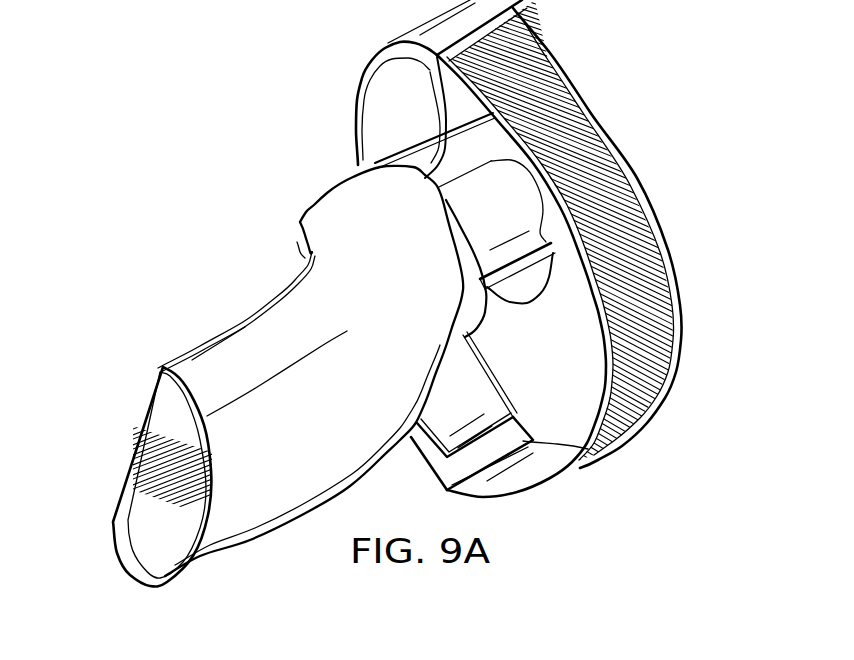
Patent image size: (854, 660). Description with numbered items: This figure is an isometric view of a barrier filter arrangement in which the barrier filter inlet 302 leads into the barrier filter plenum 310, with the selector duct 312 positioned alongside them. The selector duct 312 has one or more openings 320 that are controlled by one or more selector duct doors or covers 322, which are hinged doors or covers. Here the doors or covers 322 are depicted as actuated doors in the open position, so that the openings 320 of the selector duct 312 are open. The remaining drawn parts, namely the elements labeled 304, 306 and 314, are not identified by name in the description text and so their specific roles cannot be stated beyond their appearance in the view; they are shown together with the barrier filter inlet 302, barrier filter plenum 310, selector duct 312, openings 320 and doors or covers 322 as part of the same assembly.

The barrier filter inlet 302 is at (657, 250).
The holder 304 is at (246, 376).
The opening 306 is at (170, 415).
The barrier filter plenum 310 is at (550, 413).
The selector duct 312 is at (545, 296).
The body 314 is at (243, 340).
The openings 320 is at (478, 202).
The selector duct doors or covers 322 is at (380, 110).